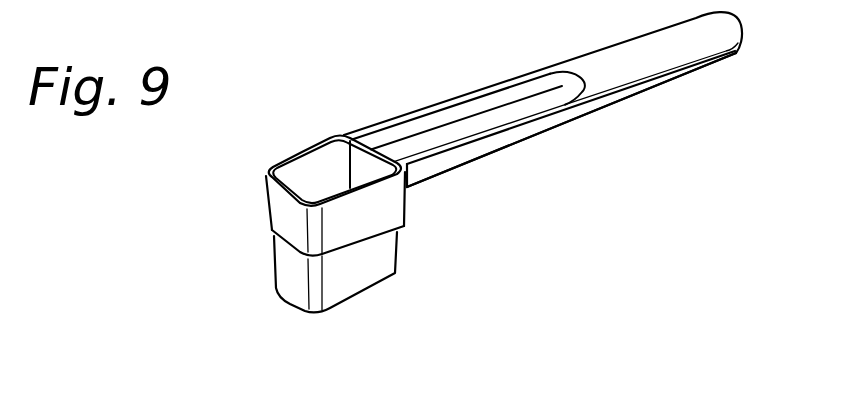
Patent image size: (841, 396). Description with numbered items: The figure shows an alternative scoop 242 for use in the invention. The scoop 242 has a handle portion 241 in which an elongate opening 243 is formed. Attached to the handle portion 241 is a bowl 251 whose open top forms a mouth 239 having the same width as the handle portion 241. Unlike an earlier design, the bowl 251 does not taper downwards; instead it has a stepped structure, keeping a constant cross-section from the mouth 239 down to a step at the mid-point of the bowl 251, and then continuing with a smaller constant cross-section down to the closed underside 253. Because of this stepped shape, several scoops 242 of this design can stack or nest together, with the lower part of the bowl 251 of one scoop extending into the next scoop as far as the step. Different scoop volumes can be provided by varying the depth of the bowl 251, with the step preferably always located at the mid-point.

The mouth 239 is at (320, 168).
The handle portion 241 is at (655, 78).
The scoop 242 is at (508, 173).
The elongate opening 243 is at (483, 104).
The bowl 251 is at (280, 210).
The closed underside 253 is at (352, 296).